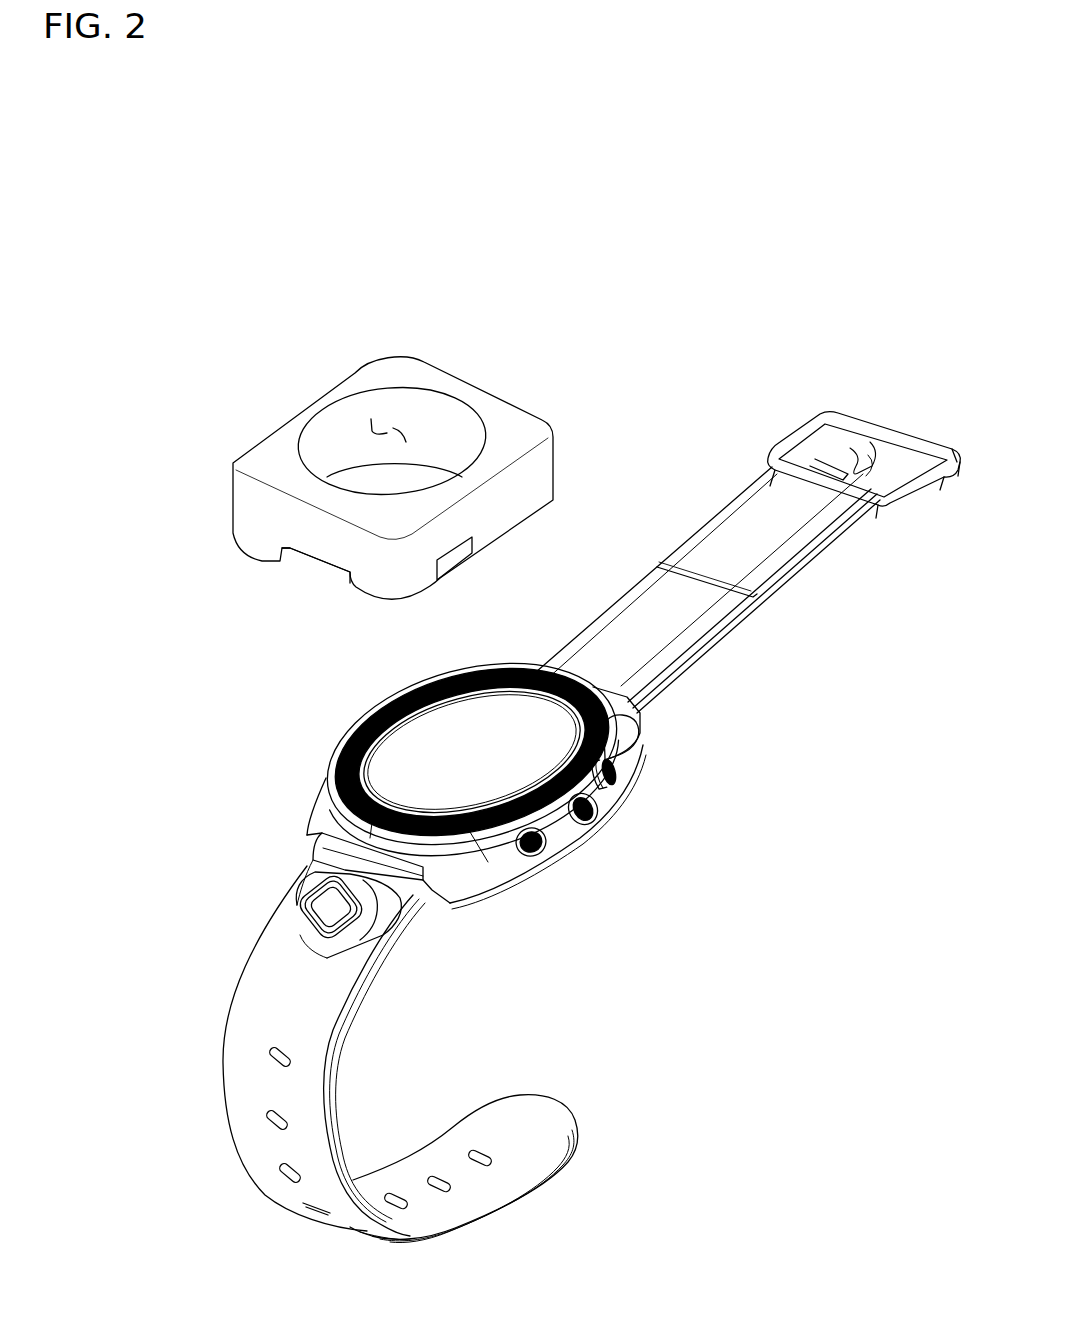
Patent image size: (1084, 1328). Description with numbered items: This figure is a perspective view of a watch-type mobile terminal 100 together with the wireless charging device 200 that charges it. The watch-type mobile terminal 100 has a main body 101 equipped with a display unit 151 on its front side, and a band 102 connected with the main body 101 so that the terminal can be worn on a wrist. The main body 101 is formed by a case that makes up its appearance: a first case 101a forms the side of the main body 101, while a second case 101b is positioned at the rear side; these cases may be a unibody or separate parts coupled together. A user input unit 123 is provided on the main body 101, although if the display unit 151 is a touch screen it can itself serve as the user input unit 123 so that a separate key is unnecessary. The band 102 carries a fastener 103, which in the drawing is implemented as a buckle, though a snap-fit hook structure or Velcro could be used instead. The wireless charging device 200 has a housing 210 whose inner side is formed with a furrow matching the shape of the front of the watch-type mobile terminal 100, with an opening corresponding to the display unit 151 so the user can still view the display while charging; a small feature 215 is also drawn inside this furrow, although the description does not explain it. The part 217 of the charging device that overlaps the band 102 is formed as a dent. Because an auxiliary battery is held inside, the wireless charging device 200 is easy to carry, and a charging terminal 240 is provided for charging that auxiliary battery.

The watch-type mobile terminal 100 is at (366, 681).
The main body 101 is at (352, 724).
The first case 101a is at (490, 863).
The second case 101b is at (465, 894).
The band 102 is at (745, 626).
The fastener 103 is at (885, 442).
The user input unit 123 is at (598, 812).
The display unit 151 is at (437, 735).
The wireless charging device 200 is at (306, 392).
The housing 210 is at (550, 467).
The connection terminal hook 215 is at (387, 432).
The part corresponding to the band 217 is at (313, 561).
The charging terminal 240 is at (455, 558).